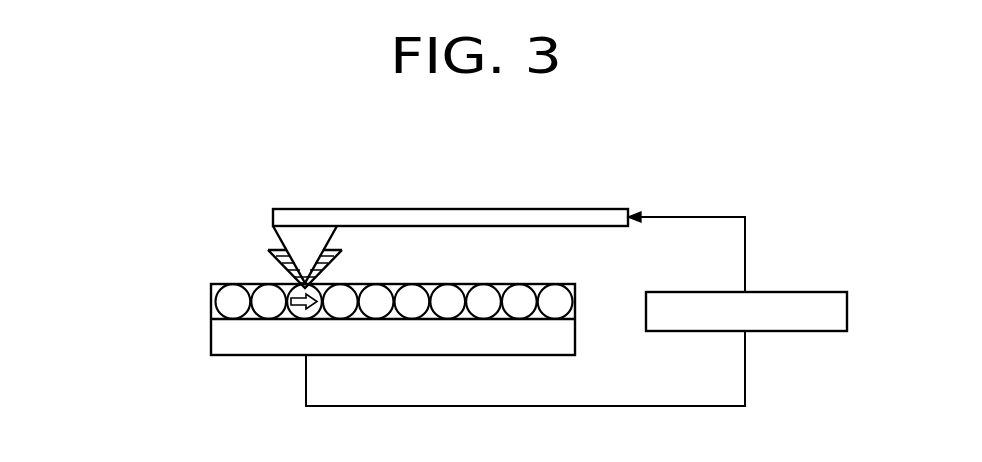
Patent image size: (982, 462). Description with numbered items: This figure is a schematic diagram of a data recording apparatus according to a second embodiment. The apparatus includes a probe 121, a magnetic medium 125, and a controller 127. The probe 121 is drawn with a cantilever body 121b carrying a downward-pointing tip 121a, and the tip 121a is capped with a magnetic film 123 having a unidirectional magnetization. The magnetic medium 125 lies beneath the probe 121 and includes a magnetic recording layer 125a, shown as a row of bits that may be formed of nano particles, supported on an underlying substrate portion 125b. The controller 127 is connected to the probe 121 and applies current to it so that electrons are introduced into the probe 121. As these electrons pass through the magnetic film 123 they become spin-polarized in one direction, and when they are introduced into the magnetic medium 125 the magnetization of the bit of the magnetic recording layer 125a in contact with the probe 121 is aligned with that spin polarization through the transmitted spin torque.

The probe 121 is at (392, 217).
The tip 121a is at (316, 240).
The cantilever 121b is at (357, 217).
The magnetic film 123 is at (272, 252).
The magnetic medium 125 is at (313, 313).
The magnetic recording layer 125a is at (211, 302).
The substrate 125b is at (211, 331).
The controller 127 is at (800, 292).